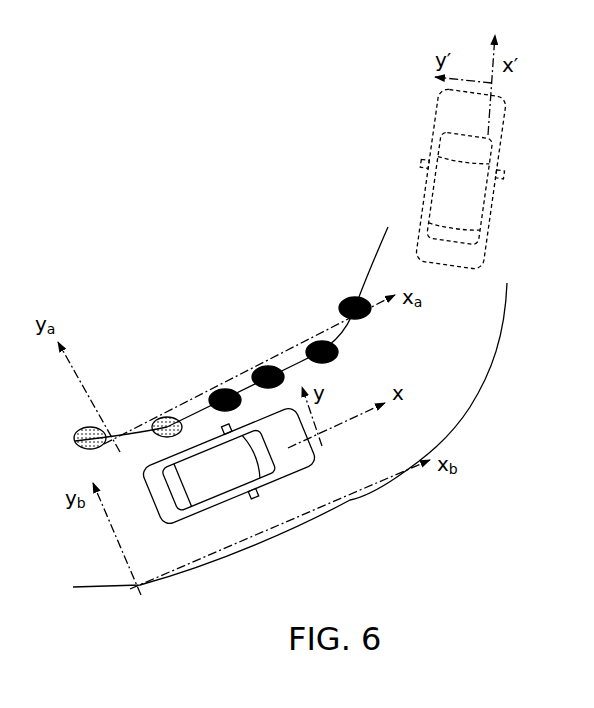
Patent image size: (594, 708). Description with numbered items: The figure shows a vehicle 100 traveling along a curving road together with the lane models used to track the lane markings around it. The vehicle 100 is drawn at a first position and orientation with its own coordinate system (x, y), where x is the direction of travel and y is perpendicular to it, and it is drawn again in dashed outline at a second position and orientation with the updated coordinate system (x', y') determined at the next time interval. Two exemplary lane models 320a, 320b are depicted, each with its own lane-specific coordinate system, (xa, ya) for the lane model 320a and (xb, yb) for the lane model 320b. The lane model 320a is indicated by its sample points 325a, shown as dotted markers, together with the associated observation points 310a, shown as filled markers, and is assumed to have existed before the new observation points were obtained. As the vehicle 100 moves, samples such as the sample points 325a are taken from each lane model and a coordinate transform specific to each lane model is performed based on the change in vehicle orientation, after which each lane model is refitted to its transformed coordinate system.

The vehicle 100 is at (238, 483).
The observation points 310a is at (342, 303).
The lane model 320a is at (331, 339).
The lane model 320b is at (483, 378).
The sample points 325a is at (165, 417).